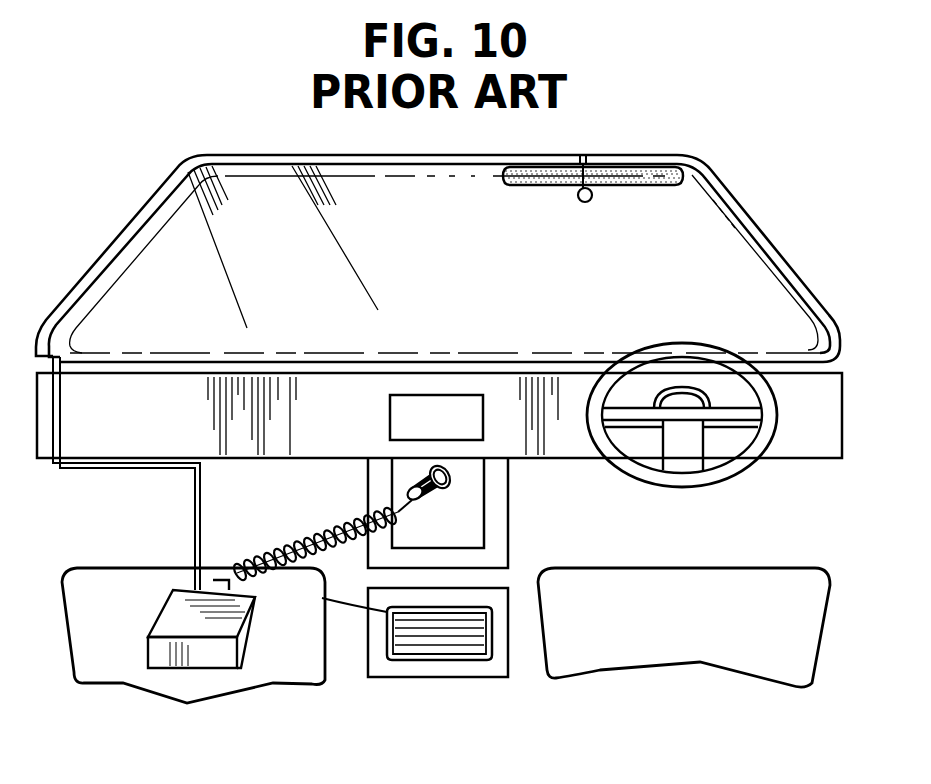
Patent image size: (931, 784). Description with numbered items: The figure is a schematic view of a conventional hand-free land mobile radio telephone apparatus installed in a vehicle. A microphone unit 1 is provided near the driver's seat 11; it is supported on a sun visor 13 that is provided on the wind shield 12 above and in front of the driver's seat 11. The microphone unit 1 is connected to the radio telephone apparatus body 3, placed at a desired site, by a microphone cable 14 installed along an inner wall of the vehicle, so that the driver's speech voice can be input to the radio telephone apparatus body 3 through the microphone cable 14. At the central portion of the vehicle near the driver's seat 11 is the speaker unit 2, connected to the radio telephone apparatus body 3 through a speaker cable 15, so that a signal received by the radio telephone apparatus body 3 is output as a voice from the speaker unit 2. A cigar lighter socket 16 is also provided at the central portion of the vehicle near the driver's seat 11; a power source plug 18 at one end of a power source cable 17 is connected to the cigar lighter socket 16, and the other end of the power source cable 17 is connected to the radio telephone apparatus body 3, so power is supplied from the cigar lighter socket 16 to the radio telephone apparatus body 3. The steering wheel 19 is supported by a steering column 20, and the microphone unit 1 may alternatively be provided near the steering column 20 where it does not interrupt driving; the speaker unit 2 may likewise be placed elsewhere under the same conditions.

The microphone unit 1 is at (588, 204).
The speaker unit 2 is at (468, 656).
The radio telephone apparatus body 3 is at (148, 650).
The driver's seat 11 is at (773, 582).
The wind shield 12 is at (178, 205).
The sun visor 13 is at (652, 166).
The microphone cable 14 is at (137, 470).
The speaker cable 15 is at (310, 598).
The cigar lighter socket 16 is at (452, 478).
The power source cable 17 is at (308, 530).
The power source plug 18 is at (398, 488).
The steering wheel 19 is at (694, 348).
The steering column 20 is at (713, 427).